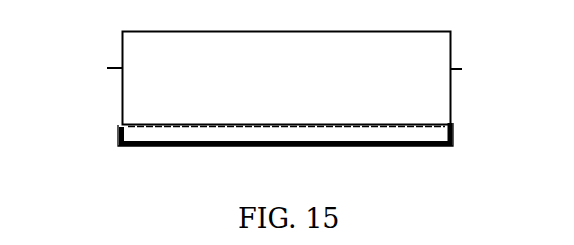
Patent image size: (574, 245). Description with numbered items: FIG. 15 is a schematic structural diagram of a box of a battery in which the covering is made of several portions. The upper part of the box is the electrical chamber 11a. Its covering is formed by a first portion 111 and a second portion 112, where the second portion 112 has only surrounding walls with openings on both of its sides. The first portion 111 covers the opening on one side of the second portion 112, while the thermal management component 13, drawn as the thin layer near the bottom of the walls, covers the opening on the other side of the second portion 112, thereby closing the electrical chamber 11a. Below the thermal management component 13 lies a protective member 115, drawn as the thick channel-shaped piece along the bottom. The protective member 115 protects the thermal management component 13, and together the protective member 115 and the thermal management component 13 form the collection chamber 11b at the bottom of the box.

The electrical chamber 11a is at (438, 44).
The collection chamber 11b is at (452, 146).
The first portion 111 is at (122, 42).
The second portion 112 is at (122, 102).
The thermal management component 13 is at (445, 119).
The protective member 115 is at (358, 147).